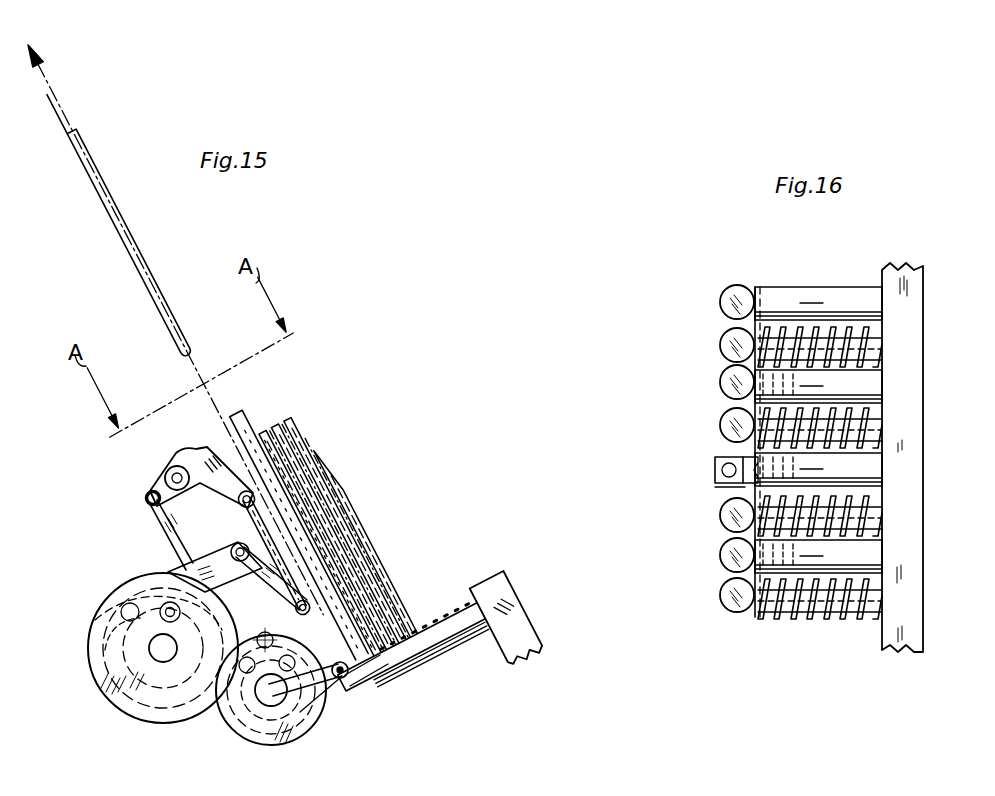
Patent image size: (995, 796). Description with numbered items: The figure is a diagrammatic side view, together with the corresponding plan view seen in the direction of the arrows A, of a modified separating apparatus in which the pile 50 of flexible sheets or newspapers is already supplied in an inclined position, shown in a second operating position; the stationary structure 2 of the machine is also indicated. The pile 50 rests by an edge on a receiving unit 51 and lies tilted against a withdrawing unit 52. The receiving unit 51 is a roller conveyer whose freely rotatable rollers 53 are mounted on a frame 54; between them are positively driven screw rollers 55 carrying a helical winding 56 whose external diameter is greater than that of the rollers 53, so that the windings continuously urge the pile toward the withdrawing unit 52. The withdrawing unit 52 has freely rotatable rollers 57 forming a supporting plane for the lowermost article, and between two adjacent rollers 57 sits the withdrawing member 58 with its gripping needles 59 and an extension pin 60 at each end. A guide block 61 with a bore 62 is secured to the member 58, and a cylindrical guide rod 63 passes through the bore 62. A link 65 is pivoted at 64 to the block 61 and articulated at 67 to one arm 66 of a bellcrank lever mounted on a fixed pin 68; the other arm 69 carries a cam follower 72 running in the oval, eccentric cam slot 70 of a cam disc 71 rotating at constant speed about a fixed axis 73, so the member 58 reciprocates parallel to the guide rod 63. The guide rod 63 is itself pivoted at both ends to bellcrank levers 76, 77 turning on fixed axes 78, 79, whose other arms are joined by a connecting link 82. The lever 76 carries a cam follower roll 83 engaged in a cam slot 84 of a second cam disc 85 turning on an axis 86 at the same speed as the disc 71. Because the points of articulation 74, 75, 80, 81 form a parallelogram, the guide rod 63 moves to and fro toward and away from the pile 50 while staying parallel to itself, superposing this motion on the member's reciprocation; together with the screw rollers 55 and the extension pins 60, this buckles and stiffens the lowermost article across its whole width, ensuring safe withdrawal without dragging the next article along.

In FIG. 15, the frame bar 2 is at (242, 411).
In FIG. 16, the frame bar 2 is at (753, 577).
In FIG. 15, the pile 50 is at (305, 455).
In FIG. 15, the receiving unit 51 is at (433, 609).
In FIG. 15, the withdrawing unit 52 is at (230, 453).
In FIG. 15, the rollers 53 is at (462, 630).
In FIG. 16, the rollers 53 is at (870, 312).
In FIG. 15, the frame 54 is at (500, 590).
In FIG. 16, the frame 54 is at (905, 577).
In FIG. 15, the screw rollers 55 is at (339, 534).
In FIG. 16, the screw rollers 55 is at (870, 347).
In FIG. 15, the helical winding 56 is at (460, 600).
In FIG. 16, the helical winding 56 is at (835, 327).
In FIG. 15, the rollers 57 is at (350, 672).
In FIG. 16, the rollers 57 is at (720, 378).
In FIG. 15, the withdrawing member 58 is at (285, 510).
In FIG. 16, the withdrawing member 58 is at (740, 487).
In FIG. 15, the gripping needles 59 is at (292, 514).
In FIG. 15, the extension pin 60 is at (255, 452).
In FIG. 16, the extension pin 60 is at (750, 470).
In FIG. 15, the guide block 61 is at (308, 558).
In FIG. 16, the guide block 61 is at (743, 462).
In FIG. 16, the bore 62 is at (715, 470).
In FIG. 15, the guide rod 63 is at (265, 535).
In FIG. 15, the pivot 64 is at (312, 606).
In FIG. 15, the link 65 is at (272, 588).
In FIG. 15, the arm 66 is at (180, 557).
In FIG. 15, the articulation 67 is at (240, 562).
In FIG. 15, the fixed pin 68 is at (126, 604).
In FIG. 15, the arm 69 is at (125, 628).
In FIG. 15, the cam slot 70 is at (170, 690).
In FIG. 15, the cam disc 71 is at (135, 708).
In FIG. 15, the cam follower 72 is at (178, 618).
In FIG. 15, the fixed axis 73 is at (150, 648).
In FIG. 15, the point of articulation 74 is at (362, 677).
In FIG. 15, the point of articulation 75 is at (307, 447).
In FIG. 15, the bellcrank lever 76 is at (347, 677).
In FIG. 15, the bellcrank lever 77 is at (198, 447).
In FIG. 15, the fixed axis 78 is at (266, 633).
In FIG. 15, the fixed axis 79 is at (168, 474).
In FIG. 15, the point of articulation 80 is at (226, 703).
In FIG. 15, the point of articulation 81 is at (147, 498).
In FIG. 15, the connecting link 82 is at (168, 524).
In FIG. 15, the cam follower roll 83 is at (313, 708).
In FIG. 15, the cam slot 84 is at (258, 703).
In FIG. 15, the cam disc 85 is at (297, 727).
In FIG. 15, the axis 86 is at (230, 727).